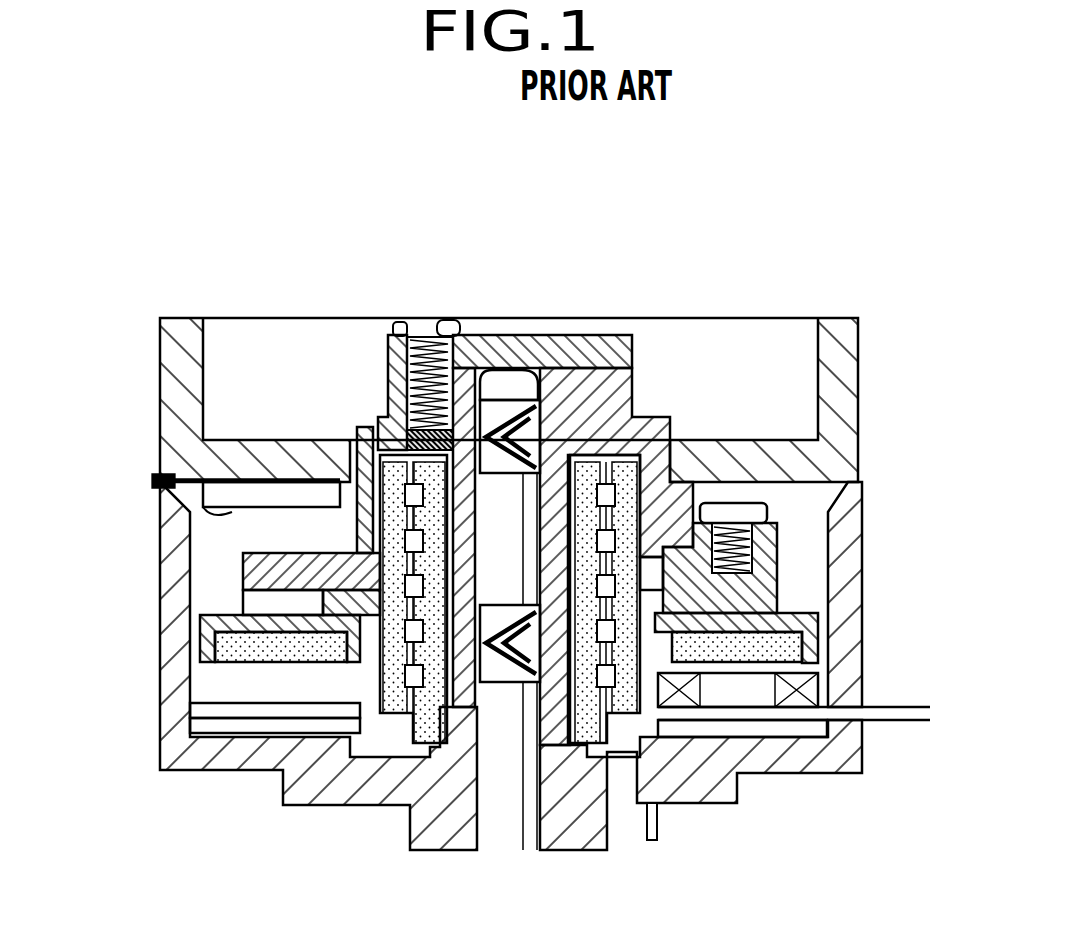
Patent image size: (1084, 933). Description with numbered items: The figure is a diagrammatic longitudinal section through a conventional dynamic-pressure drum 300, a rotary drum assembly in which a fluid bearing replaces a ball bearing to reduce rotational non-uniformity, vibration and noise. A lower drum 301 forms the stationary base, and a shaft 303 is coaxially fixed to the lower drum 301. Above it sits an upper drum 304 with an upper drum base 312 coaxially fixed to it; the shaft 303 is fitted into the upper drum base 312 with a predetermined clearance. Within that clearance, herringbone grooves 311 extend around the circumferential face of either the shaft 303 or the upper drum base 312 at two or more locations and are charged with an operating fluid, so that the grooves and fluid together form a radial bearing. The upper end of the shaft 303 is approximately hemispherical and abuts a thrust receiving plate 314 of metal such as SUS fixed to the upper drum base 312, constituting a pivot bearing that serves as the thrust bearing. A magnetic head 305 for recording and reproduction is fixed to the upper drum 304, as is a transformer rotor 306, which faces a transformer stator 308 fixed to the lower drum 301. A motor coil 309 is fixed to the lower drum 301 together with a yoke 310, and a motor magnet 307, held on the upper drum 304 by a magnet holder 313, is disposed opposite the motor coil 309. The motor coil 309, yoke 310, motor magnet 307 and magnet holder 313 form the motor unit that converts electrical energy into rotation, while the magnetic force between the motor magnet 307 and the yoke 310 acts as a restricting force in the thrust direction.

The dynamic-pressure drum 300 is at (282, 283).
The lower drum 301 is at (843, 542).
The shaft 303 is at (530, 790).
The upper drum 304 is at (863, 385).
The magnetic head 305 is at (270, 488).
The transformer (rotor) 306 is at (390, 512).
The motor magnet 307 is at (768, 647).
The transformer (stator) 308 is at (410, 598).
The motor coil 309 is at (807, 692).
The yoke 310 is at (790, 732).
The herringbone grooves 311 is at (495, 398).
The upper drum base 312 is at (600, 383).
The magnet holder 313 is at (283, 623).
The thrust receiving plate 314 is at (553, 343).